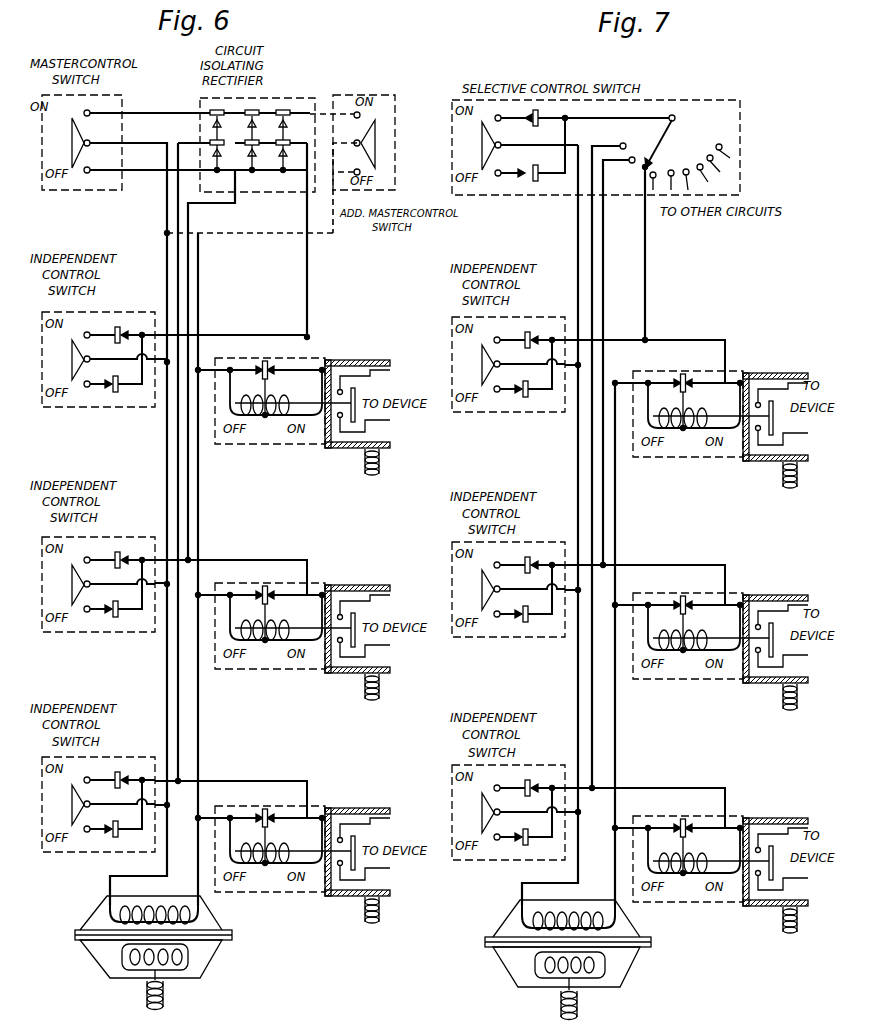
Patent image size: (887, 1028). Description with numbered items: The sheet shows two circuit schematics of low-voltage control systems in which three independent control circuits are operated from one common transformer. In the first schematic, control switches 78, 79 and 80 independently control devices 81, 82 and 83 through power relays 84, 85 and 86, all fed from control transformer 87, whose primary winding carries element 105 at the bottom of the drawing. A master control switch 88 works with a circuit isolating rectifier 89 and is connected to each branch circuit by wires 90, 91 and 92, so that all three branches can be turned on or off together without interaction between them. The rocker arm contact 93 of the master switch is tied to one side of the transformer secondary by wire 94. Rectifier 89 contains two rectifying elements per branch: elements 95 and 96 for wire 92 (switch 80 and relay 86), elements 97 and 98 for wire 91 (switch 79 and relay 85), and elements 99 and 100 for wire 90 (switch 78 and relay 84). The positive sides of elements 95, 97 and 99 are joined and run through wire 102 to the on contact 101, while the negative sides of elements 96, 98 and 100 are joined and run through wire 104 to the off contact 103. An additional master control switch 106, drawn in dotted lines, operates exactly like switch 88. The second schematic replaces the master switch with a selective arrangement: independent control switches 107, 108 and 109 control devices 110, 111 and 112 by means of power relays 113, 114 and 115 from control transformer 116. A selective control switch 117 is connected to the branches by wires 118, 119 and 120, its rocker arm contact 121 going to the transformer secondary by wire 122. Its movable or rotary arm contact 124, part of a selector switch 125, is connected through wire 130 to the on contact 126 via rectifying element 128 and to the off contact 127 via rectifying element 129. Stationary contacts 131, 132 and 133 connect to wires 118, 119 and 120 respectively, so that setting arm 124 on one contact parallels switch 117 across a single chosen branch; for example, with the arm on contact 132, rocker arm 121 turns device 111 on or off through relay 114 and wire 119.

In FIG. 6, the control switch 78 is at (102, 408).
In FIG. 6, the control switch 79 is at (90, 633).
In FIG. 6, the control switch 80 is at (48, 853).
In FIG. 6, the device 81 is at (371, 417).
In FIG. 6, the device 82 is at (372, 642).
In FIG. 6, the device 83 is at (372, 865).
In FIG. 6, the power relay 84 is at (240, 448).
In FIG. 6, the power relay 85 is at (240, 673).
In FIG. 6, the power relay 86 is at (285, 896).
In FIG. 6, the control transformer 87 is at (98, 966).
In FIG. 6, the master control switch 88 is at (108, 100).
In FIG. 6, the circuit isolating rectifier 89 is at (284, 67).
In FIG. 6, the wire 90 is at (306, 275).
In FIG. 6, the wire 91 is at (189, 258).
In FIG. 6, the wire 92 is at (179, 284).
In FIG. 6, the rocker arm contact 93 is at (82, 136).
In FIG. 6, the wire 94 is at (165, 216).
In FIG. 6, the rectifying element 95 is at (216, 109).
In FIG. 6, the rectifying element 96 is at (211, 141).
In FIG. 6, the rectifying element 97 is at (262, 110).
In FIG. 6, the rectifying element 98 is at (262, 152).
In FIG. 6, the rectifying element 99 is at (291, 111).
In FIG. 6, the rectifying element 100 is at (296, 152).
In FIG. 6, the contact 101 is at (102, 107).
In FIG. 6, the wire 102 is at (128, 114).
In FIG. 6, the contact 103 is at (92, 180).
In FIG. 6, the wire 104 is at (130, 176).
In FIG. 6, the transformer primary winding 105 is at (201, 895).
In FIG. 6, the additional master control switch 106 is at (378, 97).
In FIG. 7, the independent control switch 107 is at (488, 413).
In FIG. 7, the independent control switch 108 is at (497, 638).
In FIG. 7, the independent control switch 109 is at (461, 859).
In FIG. 7, the device 110 is at (786, 430).
In FIG. 7, the device 111 is at (786, 652).
In FIG. 7, the device 112 is at (786, 875).
In FIG. 7, the power relay 113 is at (660, 453).
In FIG. 7, the power relay 114 is at (679, 679).
In FIG. 7, the power relay 115 is at (681, 899).
In FIG. 7, the control transformer 116 is at (628, 966).
In FIG. 7, the selective control switch 117 is at (740, 104).
In FIG. 7, the wire 118 is at (593, 247).
In FIG. 7, the wire 119 is at (604, 277).
In FIG. 7, the wire 120 is at (647, 292).
In FIG. 7, the rocker arm contact 121 is at (500, 148).
In FIG. 7, the wire 122 is at (576, 243).
In FIG. 7, the movable or rotary arm contact 124 is at (677, 118).
In FIG. 7, the selector switch 125 is at (691, 165).
In FIG. 7, the on contact 126 is at (500, 121).
In FIG. 7, the off contact 127 is at (498, 180).
In FIG. 7, the rectifying element 128 is at (540, 117).
In FIG. 7, the rectifying element 129 is at (537, 183).
In FIG. 7, the wire 130 is at (603, 120).
In FIG. 7, the stationary contact 131 is at (619, 145).
In FIG. 7, the stationary contact 132 is at (630, 164).
In FIG. 7, the stationary contact 133 is at (643, 171).